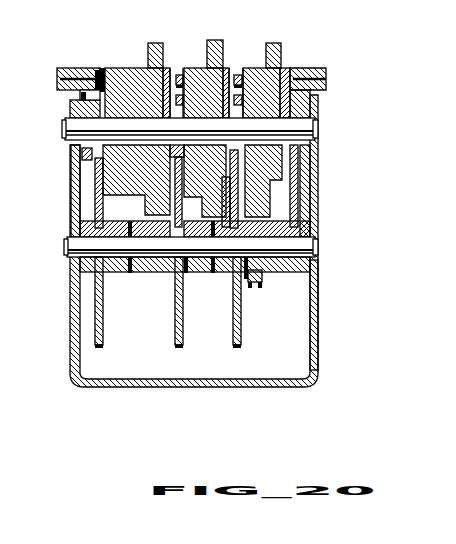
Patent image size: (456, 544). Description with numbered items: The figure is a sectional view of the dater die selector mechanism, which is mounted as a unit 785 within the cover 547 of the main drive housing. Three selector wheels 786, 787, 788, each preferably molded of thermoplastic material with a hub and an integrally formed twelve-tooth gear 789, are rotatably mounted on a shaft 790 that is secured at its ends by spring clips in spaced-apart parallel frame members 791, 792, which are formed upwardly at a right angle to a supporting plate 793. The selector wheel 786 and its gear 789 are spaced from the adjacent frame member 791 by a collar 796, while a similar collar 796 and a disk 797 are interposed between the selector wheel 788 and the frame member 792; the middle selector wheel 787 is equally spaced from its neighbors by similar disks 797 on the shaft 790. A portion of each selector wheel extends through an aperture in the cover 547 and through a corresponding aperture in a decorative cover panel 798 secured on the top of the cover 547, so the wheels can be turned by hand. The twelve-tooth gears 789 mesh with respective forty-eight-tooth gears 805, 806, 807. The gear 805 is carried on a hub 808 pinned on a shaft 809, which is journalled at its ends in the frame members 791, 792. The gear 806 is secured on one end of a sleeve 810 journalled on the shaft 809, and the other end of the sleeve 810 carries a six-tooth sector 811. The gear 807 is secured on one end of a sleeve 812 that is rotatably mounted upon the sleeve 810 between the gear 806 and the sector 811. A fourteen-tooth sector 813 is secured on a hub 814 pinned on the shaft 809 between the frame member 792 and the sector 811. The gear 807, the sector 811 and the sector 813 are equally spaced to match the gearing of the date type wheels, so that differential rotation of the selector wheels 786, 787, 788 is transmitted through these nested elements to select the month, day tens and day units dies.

The cover 547 is at (55, 72).
The dater dies selection unit 785 is at (261, 31).
The selector wheel 786 is at (150, 44).
The selector wheel 787 is at (210, 58).
The selector wheel 788 is at (280, 45).
The twelve-tooth gear 789 is at (92, 99).
The shaft 790 is at (75, 125).
The frame member 791 is at (78, 205).
The frame member 792 is at (311, 214).
The supporting plate 793 is at (266, 381).
The collar 796 is at (80, 152).
The disk 797 is at (172, 72).
The cover panel 798 is at (76, 72).
The forty-eight-tooth gear 805 is at (100, 348).
The forty-eight-tooth gear 806 is at (180, 348).
The forty-eight-tooth gear 807 is at (240, 348).
The hub 808 is at (116, 273).
The shaft 809 is at (70, 241).
The sleeve 810 is at (186, 274).
The six-tooth sector 811 is at (246, 282).
The sleeve 812 is at (228, 274).
The fourteen-tooth sector 813 is at (256, 284).
The hub 814 is at (311, 288).